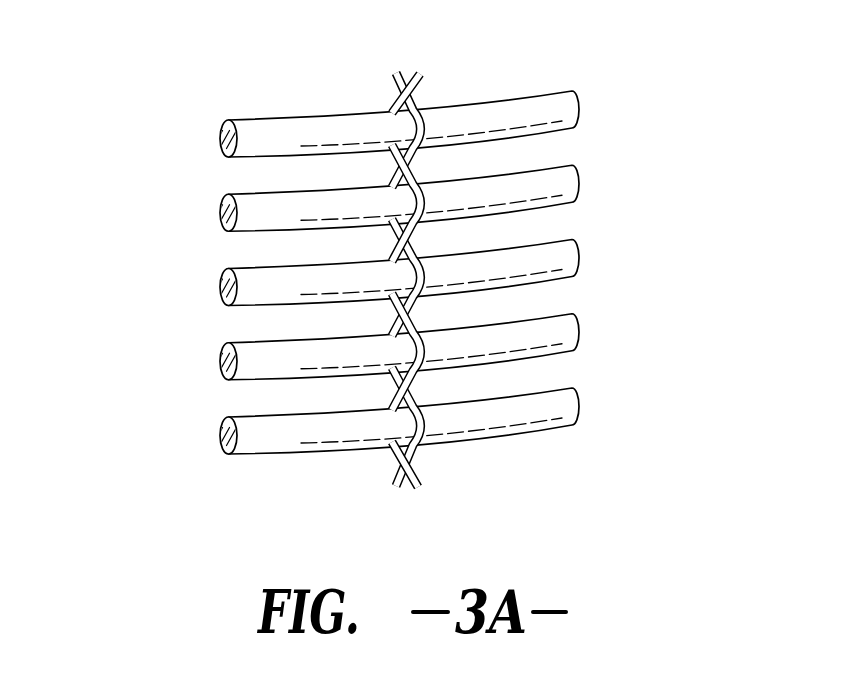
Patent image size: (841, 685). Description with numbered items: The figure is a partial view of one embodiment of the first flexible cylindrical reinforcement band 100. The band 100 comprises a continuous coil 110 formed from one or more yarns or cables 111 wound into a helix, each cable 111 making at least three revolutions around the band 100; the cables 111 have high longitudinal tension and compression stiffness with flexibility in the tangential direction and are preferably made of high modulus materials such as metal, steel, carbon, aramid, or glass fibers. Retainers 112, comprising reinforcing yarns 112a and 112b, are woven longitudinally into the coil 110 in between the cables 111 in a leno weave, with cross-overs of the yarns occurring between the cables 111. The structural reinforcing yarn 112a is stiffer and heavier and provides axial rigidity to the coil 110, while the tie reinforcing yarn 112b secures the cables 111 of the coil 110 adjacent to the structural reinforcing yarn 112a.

The first flexible cylindrical reinforcement band 100 is at (628, 107).
The coil 110 is at (131, 110).
The cable 111 is at (217, 143).
The retainer 112 is at (398, 78).
The structural reinforcing yarn 112a is at (397, 452).
The tie reinforcing yarn 112b is at (433, 452).